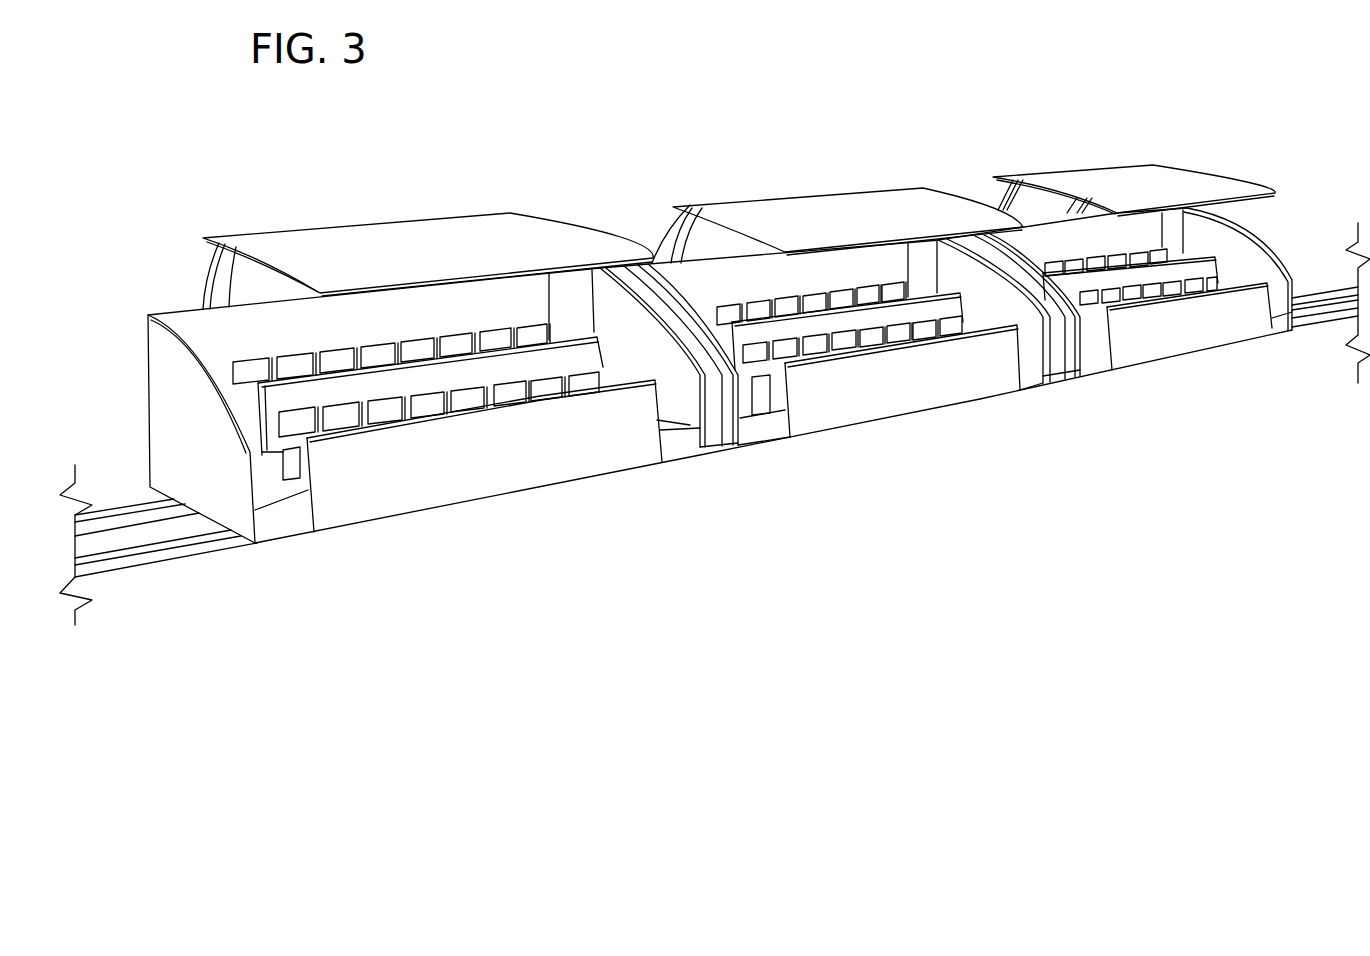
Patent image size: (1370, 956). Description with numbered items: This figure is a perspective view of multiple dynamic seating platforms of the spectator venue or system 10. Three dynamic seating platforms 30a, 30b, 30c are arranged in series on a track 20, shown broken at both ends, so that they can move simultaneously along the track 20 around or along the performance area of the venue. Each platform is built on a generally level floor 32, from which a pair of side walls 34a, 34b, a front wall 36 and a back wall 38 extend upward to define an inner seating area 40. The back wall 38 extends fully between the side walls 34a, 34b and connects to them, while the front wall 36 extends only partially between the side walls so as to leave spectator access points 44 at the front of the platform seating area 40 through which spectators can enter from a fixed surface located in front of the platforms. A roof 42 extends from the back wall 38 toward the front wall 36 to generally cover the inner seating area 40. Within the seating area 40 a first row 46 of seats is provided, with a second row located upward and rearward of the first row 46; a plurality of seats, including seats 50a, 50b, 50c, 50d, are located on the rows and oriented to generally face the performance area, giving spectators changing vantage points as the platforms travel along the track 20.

The spectator venue 10 is at (755, 118).
The track 20 is at (118, 520).
The dynamic seating platform 30a is at (410, 240).
The dynamic seating platform 30b is at (838, 217).
The dynamic seating platform 30c is at (1132, 182).
The floor 32 is at (273, 503).
The side wall 34a is at (163, 405).
The side wall 34b is at (632, 321).
The front wall 36 is at (562, 448).
The back wall 38 is at (184, 327).
The inner seating area 40 is at (737, 285).
The roof 42 is at (507, 212).
The access point 44 is at (683, 395).
The first row 46 is at (670, 430).
The seat 50a is at (300, 424).
The seat 50b is at (345, 418).
The seat 50c is at (387, 411).
The seat 50d is at (428, 407).